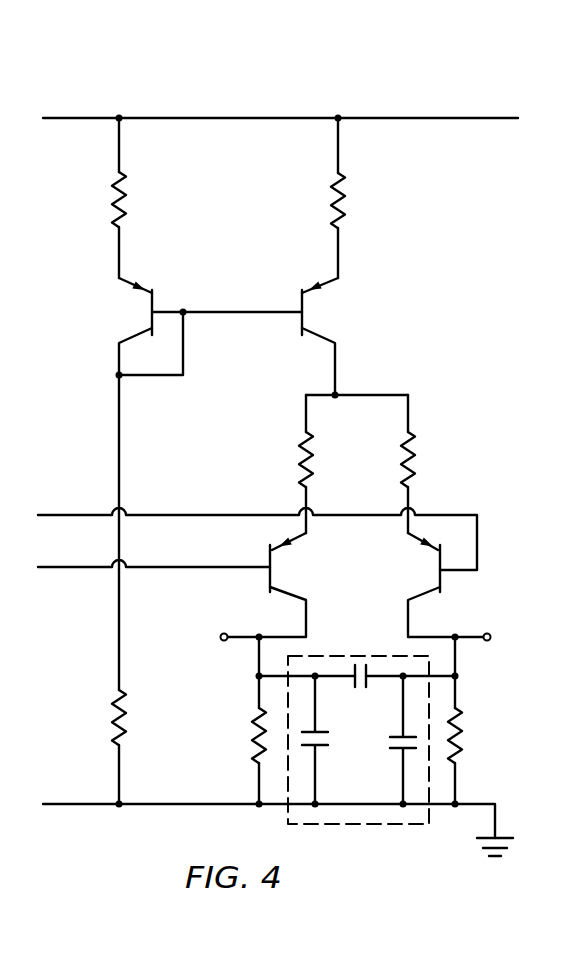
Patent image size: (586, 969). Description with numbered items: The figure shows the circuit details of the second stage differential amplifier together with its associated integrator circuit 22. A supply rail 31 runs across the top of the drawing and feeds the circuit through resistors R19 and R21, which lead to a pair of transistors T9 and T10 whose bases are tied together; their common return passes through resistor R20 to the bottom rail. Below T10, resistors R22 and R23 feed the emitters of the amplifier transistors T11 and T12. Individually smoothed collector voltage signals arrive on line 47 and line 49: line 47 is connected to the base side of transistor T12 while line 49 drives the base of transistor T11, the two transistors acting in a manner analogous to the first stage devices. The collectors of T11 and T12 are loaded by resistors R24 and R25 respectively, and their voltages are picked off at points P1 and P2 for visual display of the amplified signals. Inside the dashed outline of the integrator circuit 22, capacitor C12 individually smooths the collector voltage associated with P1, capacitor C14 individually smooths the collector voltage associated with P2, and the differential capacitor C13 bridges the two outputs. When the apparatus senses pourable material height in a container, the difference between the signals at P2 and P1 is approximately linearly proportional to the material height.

The supply voltage line 31 is at (142, 117).
The line 47 is at (51, 514).
The line 49 is at (51, 567).
The integrator circuit 22 is at (384, 825).
The resistor R19 is at (141, 198).
The resistor R20 is at (143, 717).
The resistor R21 is at (360, 198).
The resistor R22 is at (282, 464).
The resistor R23 is at (433, 464).
The resistor R24 is at (234, 740).
The resistor R25 is at (479, 740).
The transistor T9 is at (143, 328).
The transistor T10 is at (267, 338).
The transistor T11 is at (286, 585).
The transistor T12 is at (423, 585).
The capacitor C12 is at (328, 740).
The differential capacitor C13 is at (347, 686).
The capacitor C14 is at (385, 740).
The pick-off point P1 is at (225, 638).
The pick-off point P2 is at (489, 639).